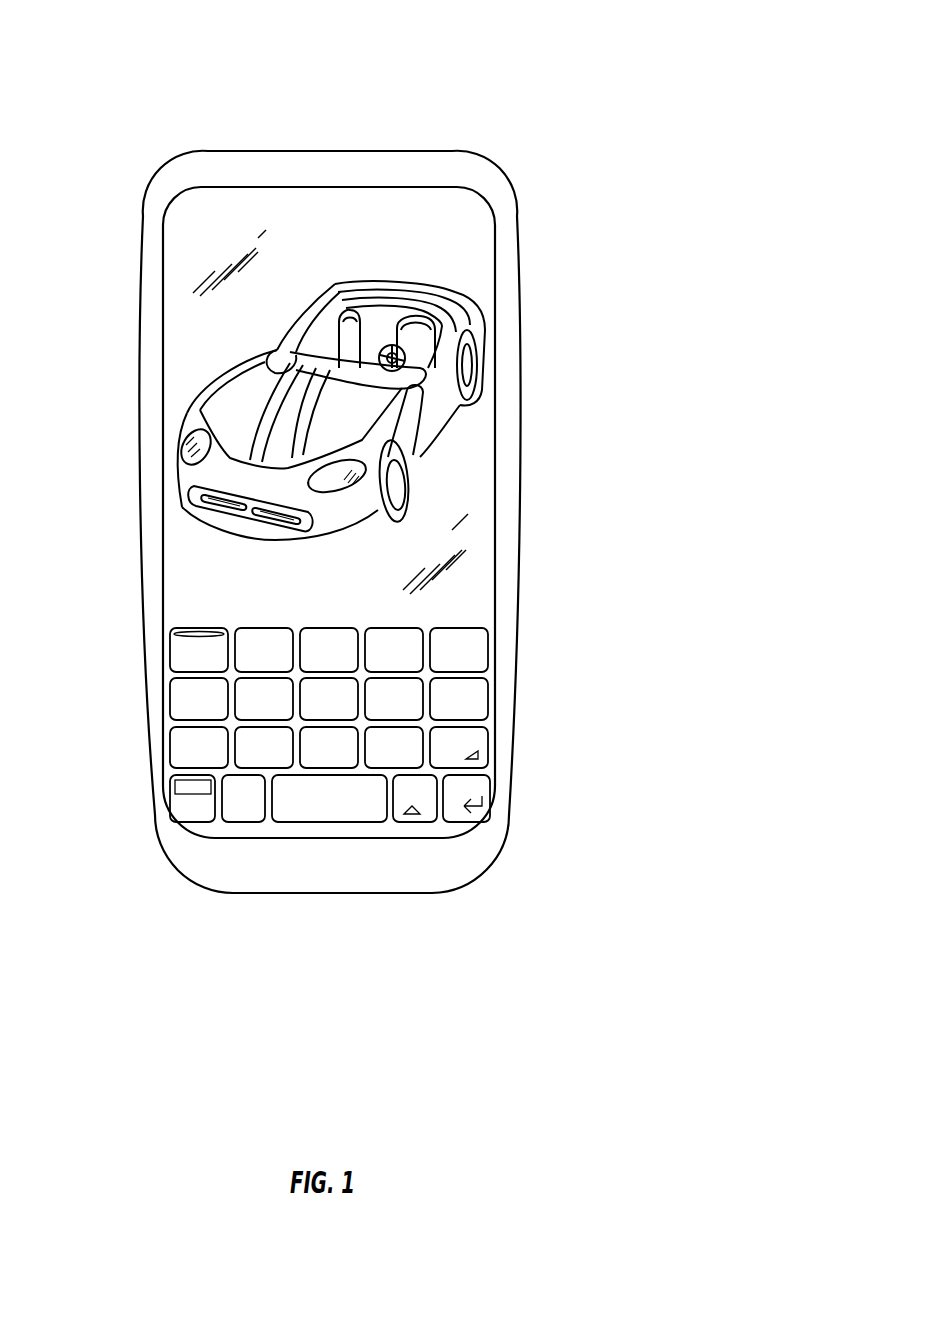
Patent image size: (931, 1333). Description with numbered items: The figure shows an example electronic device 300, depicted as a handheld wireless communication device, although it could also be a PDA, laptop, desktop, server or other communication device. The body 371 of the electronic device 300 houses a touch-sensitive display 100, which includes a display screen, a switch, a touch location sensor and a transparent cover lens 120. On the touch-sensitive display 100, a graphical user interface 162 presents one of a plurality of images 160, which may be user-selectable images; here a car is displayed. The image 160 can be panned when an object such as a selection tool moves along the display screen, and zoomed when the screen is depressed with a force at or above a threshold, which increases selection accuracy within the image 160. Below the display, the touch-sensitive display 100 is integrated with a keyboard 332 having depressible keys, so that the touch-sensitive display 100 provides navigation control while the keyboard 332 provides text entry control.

The electronic device 300 is at (576, 37).
The touch-sensitive display 100 is at (430, 186).
The transparent cover lens 120 is at (460, 505).
The graphical user interface 162 is at (205, 220).
The image 160 is at (395, 285).
The keyboard 332 is at (148, 630).
The body 371 is at (513, 788).